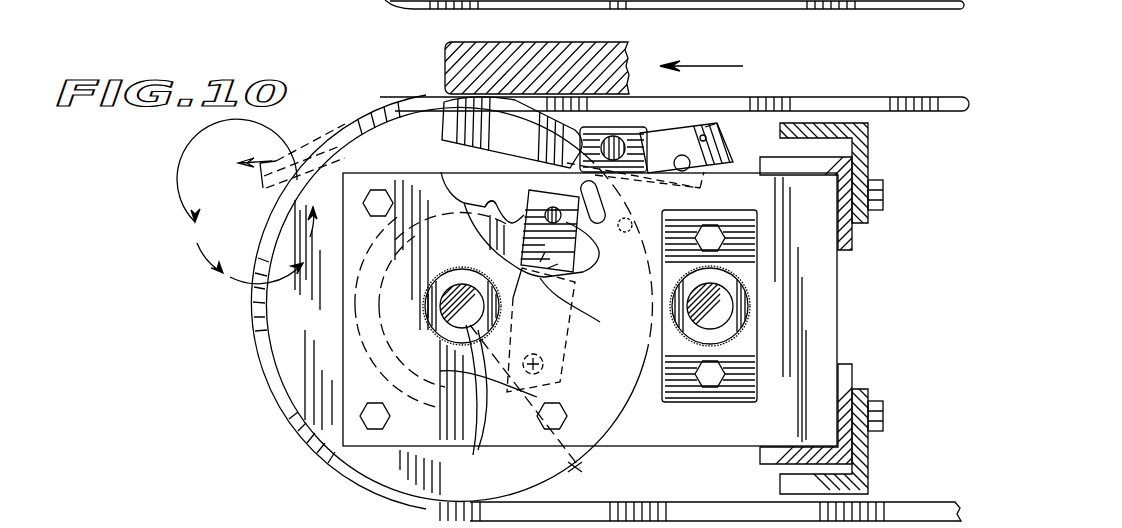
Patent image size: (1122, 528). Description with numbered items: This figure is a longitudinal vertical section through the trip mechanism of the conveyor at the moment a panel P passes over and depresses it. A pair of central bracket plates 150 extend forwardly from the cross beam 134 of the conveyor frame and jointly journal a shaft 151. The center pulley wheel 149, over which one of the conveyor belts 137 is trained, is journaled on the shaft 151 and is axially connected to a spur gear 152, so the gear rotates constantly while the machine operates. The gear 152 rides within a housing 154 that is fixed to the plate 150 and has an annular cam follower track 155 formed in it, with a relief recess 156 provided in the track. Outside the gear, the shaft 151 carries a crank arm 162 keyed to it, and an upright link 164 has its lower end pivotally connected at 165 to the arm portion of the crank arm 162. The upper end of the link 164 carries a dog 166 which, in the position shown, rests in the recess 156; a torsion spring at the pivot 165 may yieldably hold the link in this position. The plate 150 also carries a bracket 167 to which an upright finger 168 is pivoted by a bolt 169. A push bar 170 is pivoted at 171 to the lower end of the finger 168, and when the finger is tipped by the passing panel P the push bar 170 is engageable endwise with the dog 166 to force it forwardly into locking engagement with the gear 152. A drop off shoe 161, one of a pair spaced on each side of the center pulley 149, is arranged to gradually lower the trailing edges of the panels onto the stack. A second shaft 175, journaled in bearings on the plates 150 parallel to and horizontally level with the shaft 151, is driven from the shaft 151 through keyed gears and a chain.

The panel P is at (606, 48).
The cross beam 134 is at (857, 374).
The conveyor belts 137 is at (876, 103).
The center pulley wheel 149 is at (300, 350).
The central bracket plates 150 is at (812, 352).
The shaft 151 is at (446, 347).
The spur gear 152 is at (468, 240).
The housing 154 is at (499, 186).
The annular cam follower track 155 is at (525, 188).
The relief recess 156 is at (578, 276).
The drop off shoe 161 is at (292, 150).
The crank arm 162 is at (553, 404).
The upright link 164 is at (590, 308).
The pivot 165 is at (545, 362).
The dog 166 is at (561, 217).
The bracket 167 is at (630, 133).
The upright finger 168 is at (455, 118).
The bolt 169 is at (655, 130).
The push bar 170 is at (692, 128).
The pivot 171 is at (690, 168).
The shaft 175 is at (753, 314).